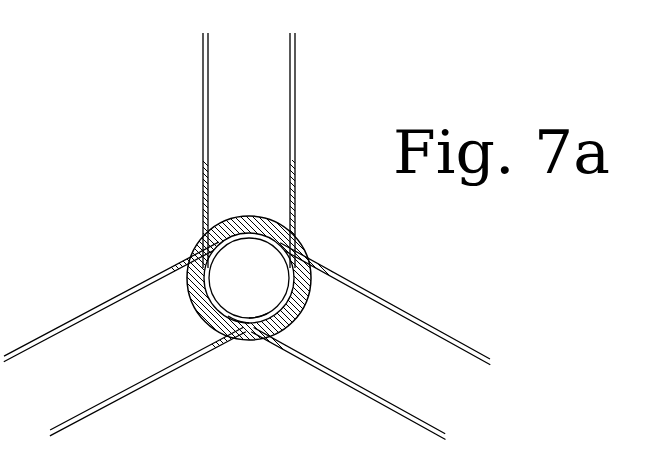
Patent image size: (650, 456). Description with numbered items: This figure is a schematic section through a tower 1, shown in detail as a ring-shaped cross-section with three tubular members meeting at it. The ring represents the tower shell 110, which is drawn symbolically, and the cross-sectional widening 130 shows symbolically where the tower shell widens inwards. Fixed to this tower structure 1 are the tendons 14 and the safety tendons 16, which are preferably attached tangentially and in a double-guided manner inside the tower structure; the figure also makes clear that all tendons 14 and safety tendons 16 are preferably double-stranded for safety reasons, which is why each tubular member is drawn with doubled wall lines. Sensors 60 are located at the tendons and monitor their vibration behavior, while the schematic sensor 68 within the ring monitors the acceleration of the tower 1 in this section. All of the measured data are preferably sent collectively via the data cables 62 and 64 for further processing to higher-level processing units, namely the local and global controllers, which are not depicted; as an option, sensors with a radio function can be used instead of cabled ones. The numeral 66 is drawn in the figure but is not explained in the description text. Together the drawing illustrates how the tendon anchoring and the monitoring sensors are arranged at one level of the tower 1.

The tower 1 is at (175, 240).
The tendons 14 is at (247, 236).
The safety tendons 16 is at (207, 120).
The sensors 60 is at (292, 160).
The data cable 62 is at (292, 182).
The data cable 64 is at (242, 322).
The ring groove 66 is at (254, 322).
The sensor 68 is at (213, 296).
The tower shell 110 is at (191, 306).
The cross-sectional widening of the tower shell 130 is at (189, 287).